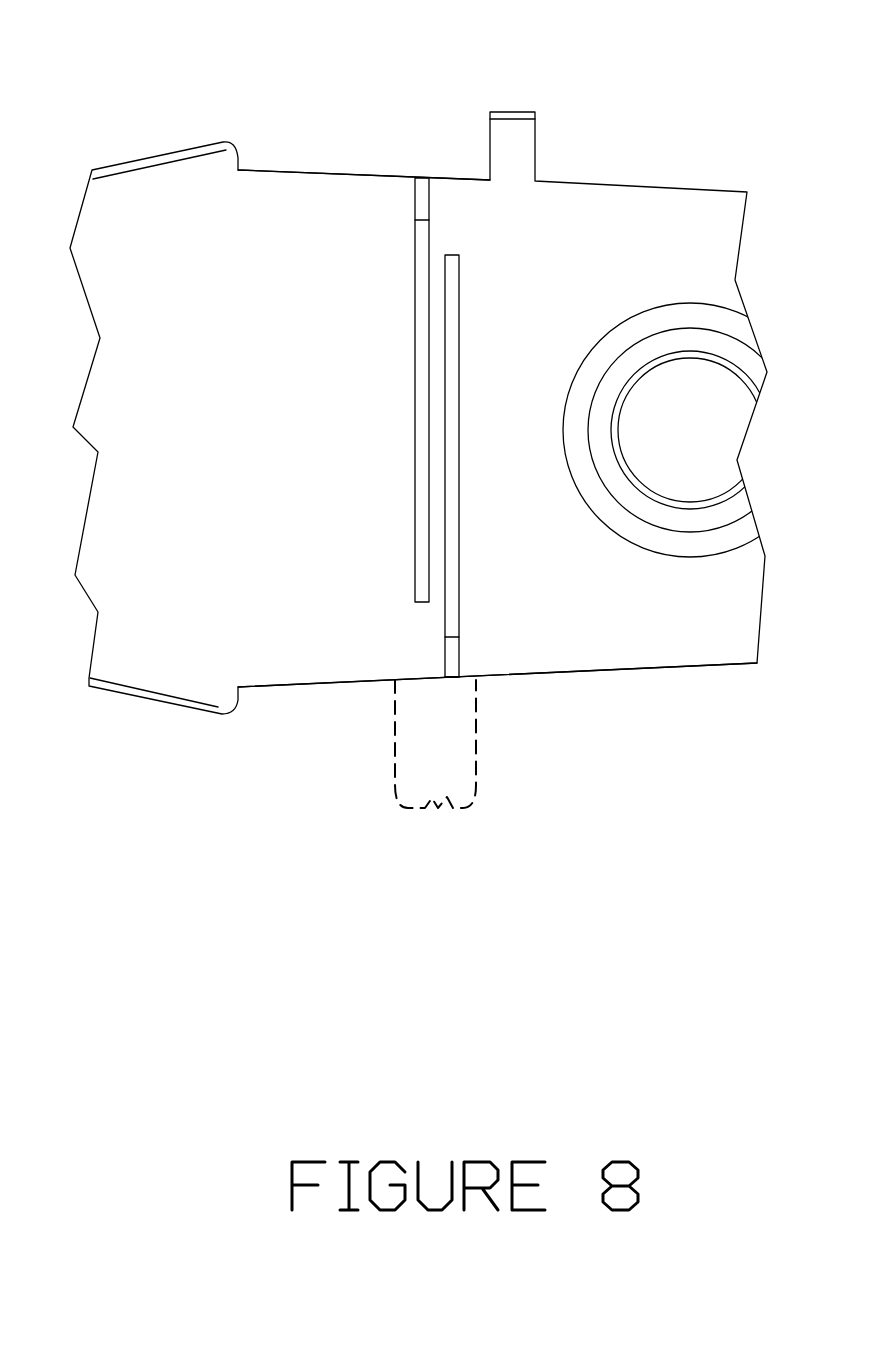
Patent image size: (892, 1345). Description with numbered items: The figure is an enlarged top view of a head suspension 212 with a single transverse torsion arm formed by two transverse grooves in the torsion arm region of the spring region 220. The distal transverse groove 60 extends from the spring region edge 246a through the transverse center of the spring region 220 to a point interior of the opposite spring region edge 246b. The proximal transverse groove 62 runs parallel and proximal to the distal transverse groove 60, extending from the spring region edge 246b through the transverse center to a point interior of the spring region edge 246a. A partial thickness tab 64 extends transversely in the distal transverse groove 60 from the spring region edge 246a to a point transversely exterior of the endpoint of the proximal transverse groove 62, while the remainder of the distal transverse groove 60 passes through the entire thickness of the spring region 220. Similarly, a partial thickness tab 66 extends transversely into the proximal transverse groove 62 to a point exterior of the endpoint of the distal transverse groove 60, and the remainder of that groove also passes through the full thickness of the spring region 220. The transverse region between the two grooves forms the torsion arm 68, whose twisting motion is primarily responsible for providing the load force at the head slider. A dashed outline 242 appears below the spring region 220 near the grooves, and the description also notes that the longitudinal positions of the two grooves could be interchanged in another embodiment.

The distal transverse groove 60 is at (420, 178).
The proximal transverse groove 62 is at (452, 680).
The partial thickness tab 64 is at (422, 205).
The partial thickness tab 66 is at (453, 648).
The torsion arm 68 is at (440, 314).
The mounting bracket assembly 212 is at (585, 830).
The spring region 220 is at (312, 590).
The tab (hidden) 242 is at (435, 761).
The spring region edge 246a is at (357, 175).
The spring region edge 246b is at (347, 683).